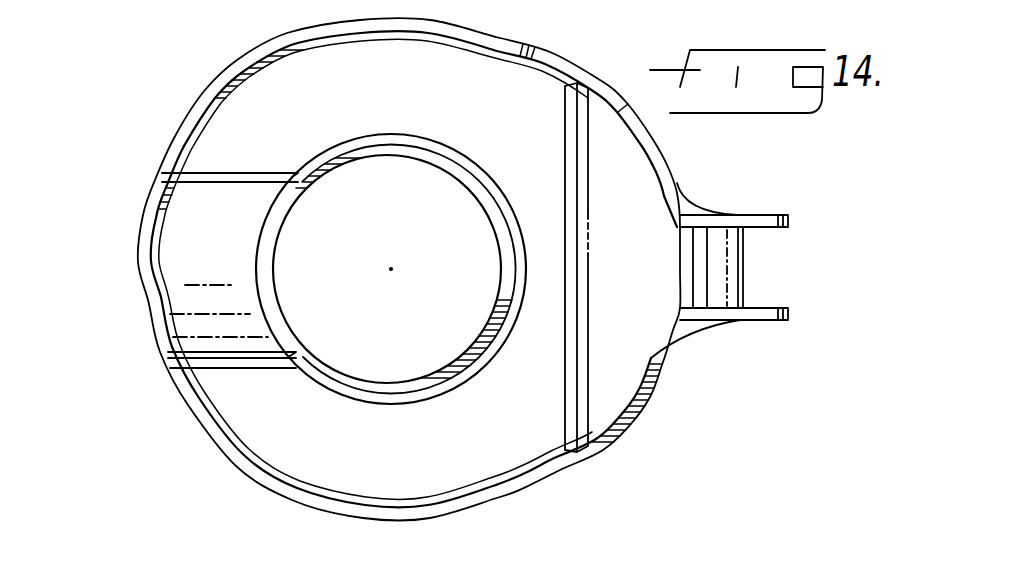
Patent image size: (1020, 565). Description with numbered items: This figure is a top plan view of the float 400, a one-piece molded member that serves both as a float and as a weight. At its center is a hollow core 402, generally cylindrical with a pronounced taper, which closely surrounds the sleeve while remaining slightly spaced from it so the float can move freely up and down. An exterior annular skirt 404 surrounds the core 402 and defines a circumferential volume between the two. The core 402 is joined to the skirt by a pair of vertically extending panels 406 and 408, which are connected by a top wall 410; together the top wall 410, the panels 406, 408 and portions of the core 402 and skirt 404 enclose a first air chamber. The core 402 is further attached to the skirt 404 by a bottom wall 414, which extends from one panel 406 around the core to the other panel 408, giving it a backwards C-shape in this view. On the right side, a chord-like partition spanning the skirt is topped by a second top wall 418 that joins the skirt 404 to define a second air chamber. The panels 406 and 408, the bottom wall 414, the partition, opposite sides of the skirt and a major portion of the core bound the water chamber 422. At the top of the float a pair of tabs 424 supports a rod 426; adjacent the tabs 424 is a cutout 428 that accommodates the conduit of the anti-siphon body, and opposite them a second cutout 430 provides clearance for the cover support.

The float 400 is at (249, 484).
The central hollow core 402 is at (393, 398).
The exterior annular skirt 404 is at (513, 497).
The vertically extending panel 406 is at (244, 364).
The vertically extending panel 408 is at (217, 175).
The top wall 410 is at (170, 262).
The bottom wall 414 is at (318, 468).
The second top wall 418 is at (627, 375).
The water chamber 422 is at (408, 96).
The tabs 424 is at (788, 212).
The rod 426 is at (740, 270).
The cutout 428 is at (558, 62).
The second cutout 430 is at (152, 330).